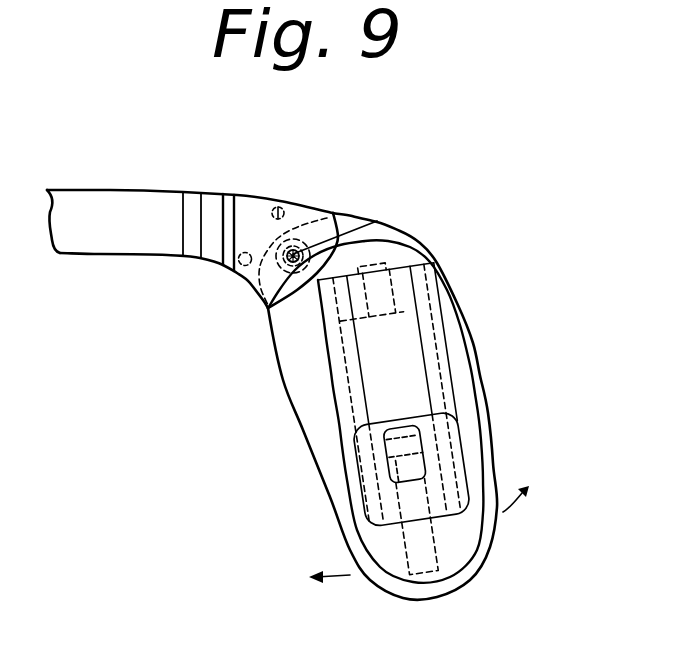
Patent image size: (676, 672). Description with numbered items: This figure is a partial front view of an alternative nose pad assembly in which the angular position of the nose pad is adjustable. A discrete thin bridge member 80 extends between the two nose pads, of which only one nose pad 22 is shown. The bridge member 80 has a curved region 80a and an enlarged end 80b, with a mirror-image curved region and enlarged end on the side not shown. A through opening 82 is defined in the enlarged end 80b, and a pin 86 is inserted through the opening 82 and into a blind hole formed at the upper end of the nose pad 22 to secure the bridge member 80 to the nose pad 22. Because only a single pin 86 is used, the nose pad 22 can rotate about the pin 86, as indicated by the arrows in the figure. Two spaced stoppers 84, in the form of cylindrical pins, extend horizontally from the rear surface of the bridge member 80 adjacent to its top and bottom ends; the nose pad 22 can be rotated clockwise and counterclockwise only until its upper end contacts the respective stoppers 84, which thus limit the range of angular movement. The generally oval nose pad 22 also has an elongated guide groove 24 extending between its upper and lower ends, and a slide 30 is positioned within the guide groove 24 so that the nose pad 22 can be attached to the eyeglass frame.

The bridge member 80 is at (85, 205).
The curved region 80a is at (222, 211).
The enlarged end 80b is at (333, 213).
The through opening 82 is at (268, 308).
The stopper 84 is at (281, 205).
The pin 86 is at (377, 221).
The nose pad 22 is at (468, 372).
The guide groove 24 is at (421, 347).
The slide 30 is at (452, 413).